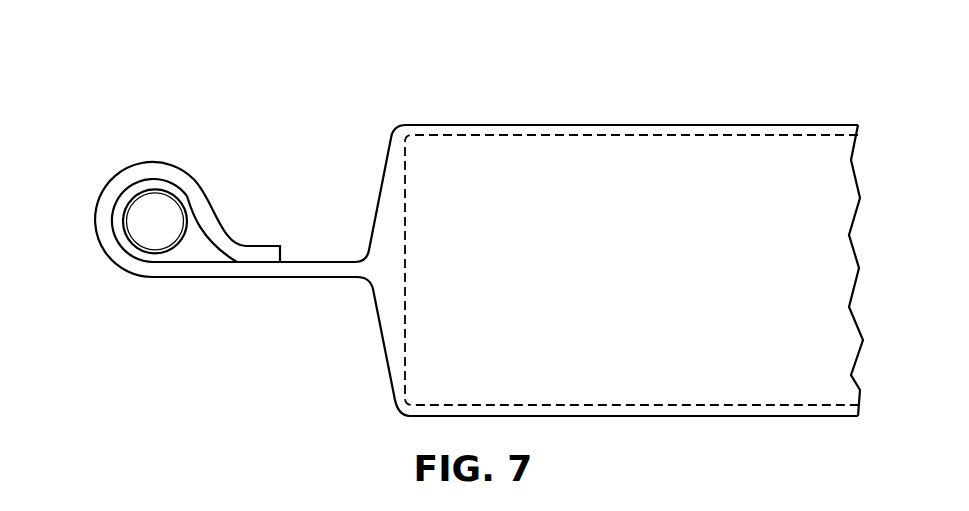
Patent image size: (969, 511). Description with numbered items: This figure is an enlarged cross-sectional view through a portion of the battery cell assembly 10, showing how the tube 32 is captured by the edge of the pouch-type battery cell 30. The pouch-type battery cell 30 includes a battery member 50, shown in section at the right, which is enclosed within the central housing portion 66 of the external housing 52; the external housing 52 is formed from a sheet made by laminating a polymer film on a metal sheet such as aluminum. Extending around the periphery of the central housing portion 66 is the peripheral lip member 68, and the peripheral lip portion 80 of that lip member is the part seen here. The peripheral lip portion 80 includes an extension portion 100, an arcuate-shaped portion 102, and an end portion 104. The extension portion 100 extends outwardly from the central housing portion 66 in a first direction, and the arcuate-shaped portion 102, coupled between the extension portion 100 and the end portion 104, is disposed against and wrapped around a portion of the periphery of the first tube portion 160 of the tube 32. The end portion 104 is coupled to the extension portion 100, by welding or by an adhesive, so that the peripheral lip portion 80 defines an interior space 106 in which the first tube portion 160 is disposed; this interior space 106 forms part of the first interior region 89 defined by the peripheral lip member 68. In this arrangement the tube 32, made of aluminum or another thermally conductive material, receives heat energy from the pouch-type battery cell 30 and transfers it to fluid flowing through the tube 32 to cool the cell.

The battery cell assembly 10 is at (615, 100).
The pouch-type battery cell 30 is at (545, 120).
The tube 32 is at (161, 176).
The battery member 50 is at (683, 137).
The external housing 52 is at (742, 125).
The central housing portion 66 is at (387, 158).
The peripheral lip member 68 is at (325, 277).
The peripheral lip portion 80 is at (313, 262).
The first interior region 89 is at (195, 248).
The extension portion 100 is at (273, 277).
The arcuate-shaped portion 102 is at (121, 172).
The end portion 104 is at (257, 246).
The interior space 106 is at (186, 194).
The first tube portion 160 is at (140, 253).